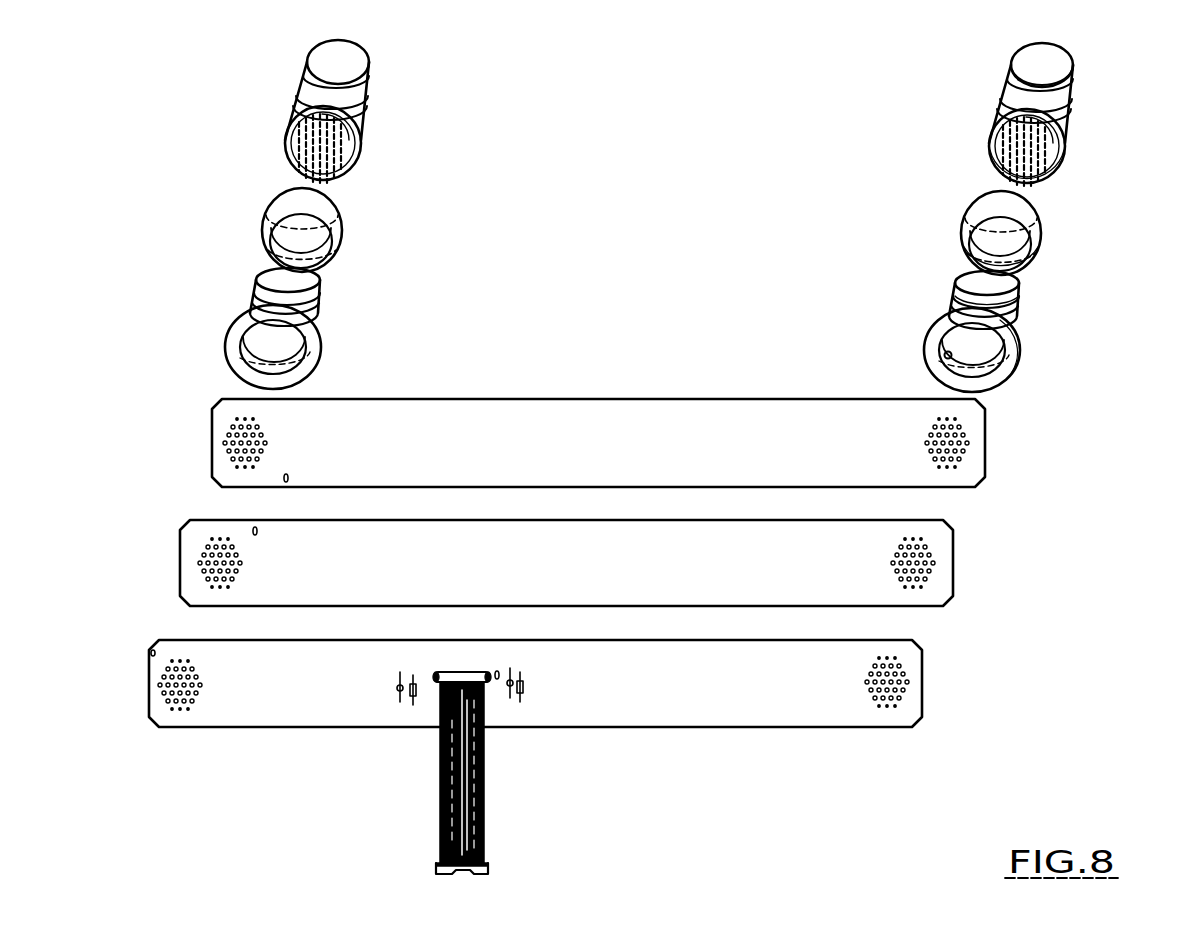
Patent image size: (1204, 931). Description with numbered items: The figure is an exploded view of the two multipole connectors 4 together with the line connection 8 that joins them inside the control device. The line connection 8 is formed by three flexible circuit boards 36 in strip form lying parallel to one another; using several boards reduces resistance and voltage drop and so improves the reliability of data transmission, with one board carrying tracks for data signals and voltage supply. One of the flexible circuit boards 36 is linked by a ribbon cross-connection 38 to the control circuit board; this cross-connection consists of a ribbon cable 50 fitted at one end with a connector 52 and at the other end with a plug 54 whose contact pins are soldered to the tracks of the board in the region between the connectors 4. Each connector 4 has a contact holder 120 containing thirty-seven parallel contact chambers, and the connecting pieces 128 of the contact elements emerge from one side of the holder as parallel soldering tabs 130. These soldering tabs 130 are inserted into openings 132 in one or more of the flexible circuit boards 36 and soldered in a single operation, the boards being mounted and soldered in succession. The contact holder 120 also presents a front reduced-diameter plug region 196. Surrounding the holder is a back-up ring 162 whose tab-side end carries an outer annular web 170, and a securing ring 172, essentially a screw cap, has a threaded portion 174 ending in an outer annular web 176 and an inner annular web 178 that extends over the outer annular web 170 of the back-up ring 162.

The connector 4 is at (370, 137).
The line connection 8 is at (634, 366).
The flexible circuit board 36 is at (975, 468).
The ribbon cross-connection 38 is at (488, 769).
The ribbon cable 50 is at (440, 793).
The connector 52 is at (487, 871).
The plug 54 is at (464, 672).
The contact holder 120 is at (303, 112).
The connecting piece 128 is at (1054, 178).
The soldering tab 130 is at (280, 156).
The opening 132 is at (971, 427).
The back-up ring 162 is at (250, 248).
The outer annular web 170 is at (1035, 265).
The securing ring 172 is at (213, 352).
The threaded portion 174 is at (950, 298).
The outer annular web 176 is at (1020, 355).
The inner annular web 178 is at (945, 352).
The plug region 196 is at (1028, 65).